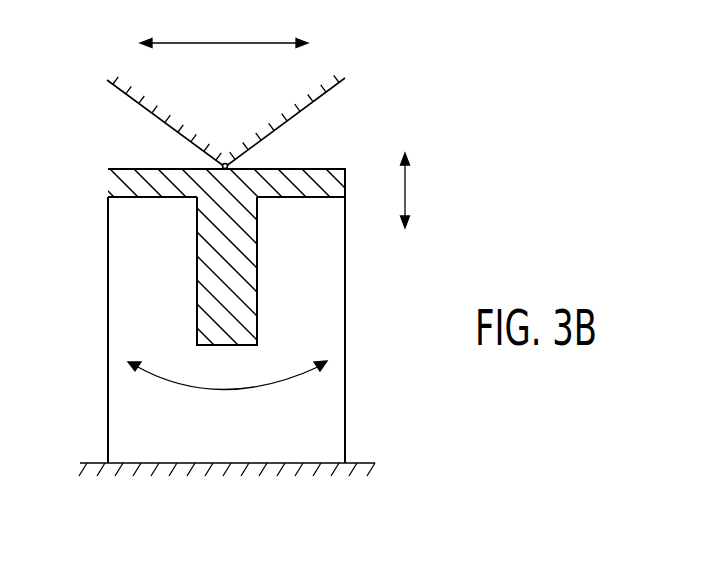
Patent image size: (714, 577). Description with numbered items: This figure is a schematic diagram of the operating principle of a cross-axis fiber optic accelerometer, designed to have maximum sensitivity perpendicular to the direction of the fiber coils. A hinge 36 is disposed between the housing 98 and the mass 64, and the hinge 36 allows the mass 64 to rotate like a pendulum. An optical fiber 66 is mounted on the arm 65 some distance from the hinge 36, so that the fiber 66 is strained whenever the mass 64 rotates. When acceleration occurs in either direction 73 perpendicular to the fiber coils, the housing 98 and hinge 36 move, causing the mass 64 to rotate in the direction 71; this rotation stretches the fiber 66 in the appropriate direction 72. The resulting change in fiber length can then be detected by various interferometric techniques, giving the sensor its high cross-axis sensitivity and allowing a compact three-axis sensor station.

The hinge 36 is at (239, 121).
The mass 64 is at (225, 285).
The arm 65 is at (128, 172).
The optical fiber 66 is at (109, 383).
The direction of mass rotation 71 is at (223, 388).
The direction of fiber stretching 72 is at (406, 180).
The direction of acceleration 73 is at (191, 43).
The housing 98 is at (242, 470).